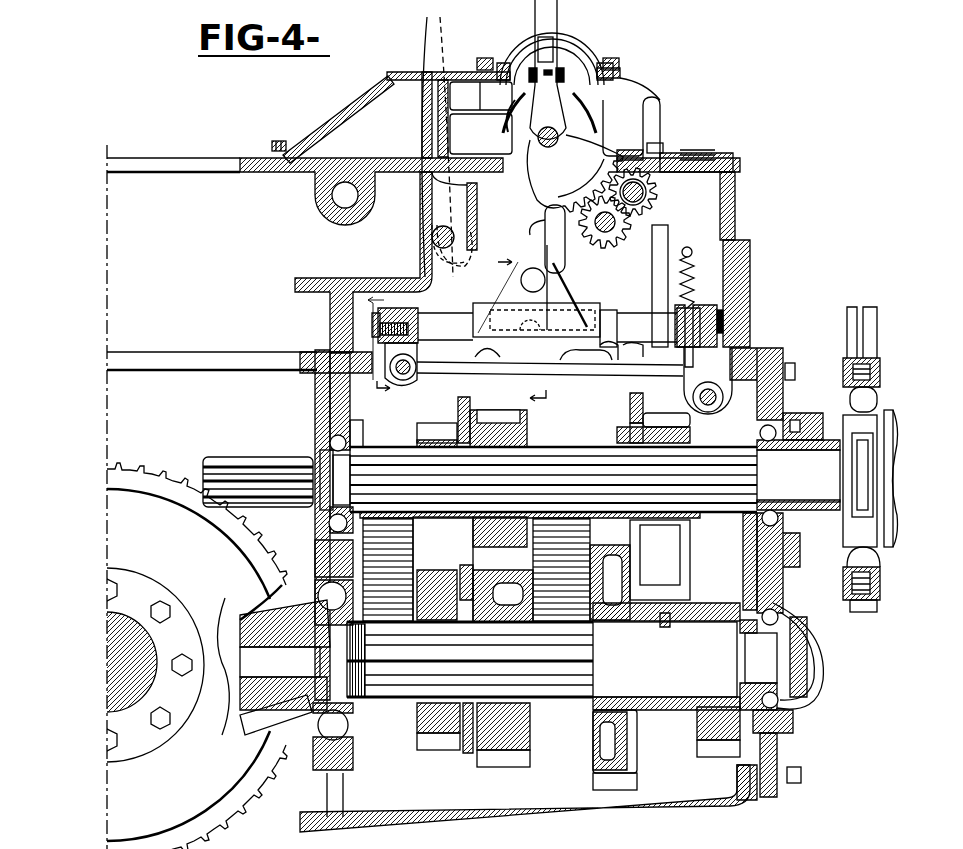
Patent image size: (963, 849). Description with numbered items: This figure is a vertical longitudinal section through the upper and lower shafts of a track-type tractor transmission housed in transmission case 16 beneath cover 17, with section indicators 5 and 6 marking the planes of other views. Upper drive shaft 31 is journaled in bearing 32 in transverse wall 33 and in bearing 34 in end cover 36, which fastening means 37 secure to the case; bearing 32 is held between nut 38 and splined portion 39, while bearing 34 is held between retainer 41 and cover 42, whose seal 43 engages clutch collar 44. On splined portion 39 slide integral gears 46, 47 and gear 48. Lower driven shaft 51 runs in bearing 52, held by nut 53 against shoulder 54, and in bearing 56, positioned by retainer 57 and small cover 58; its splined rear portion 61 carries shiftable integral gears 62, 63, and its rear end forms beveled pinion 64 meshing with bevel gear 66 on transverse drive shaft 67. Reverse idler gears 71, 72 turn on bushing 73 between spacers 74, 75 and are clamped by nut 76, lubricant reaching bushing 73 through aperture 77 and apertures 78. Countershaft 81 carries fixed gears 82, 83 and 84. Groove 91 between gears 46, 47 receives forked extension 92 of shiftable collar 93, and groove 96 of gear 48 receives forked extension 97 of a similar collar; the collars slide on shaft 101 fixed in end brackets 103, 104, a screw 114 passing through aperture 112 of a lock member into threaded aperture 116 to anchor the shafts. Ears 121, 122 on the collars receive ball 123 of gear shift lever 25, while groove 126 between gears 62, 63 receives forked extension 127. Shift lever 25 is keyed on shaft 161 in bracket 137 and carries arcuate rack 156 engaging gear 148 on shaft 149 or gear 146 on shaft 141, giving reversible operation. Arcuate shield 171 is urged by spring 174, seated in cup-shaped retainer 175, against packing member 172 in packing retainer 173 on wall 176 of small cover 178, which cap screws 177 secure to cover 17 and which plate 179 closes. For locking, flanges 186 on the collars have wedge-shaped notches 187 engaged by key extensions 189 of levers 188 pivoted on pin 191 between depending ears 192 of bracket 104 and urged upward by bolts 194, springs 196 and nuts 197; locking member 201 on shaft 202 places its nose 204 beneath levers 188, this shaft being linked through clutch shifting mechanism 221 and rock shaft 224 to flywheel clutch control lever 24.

The section line 5- 5 is at (519, 324).
The section line 6- 6 is at (379, 345).
The transmission case 16 is at (466, 806).
The cover 17 is at (283, 172).
The flywheel clutch control lever 24 is at (437, 27).
The gear shift lever 25 is at (557, 27).
The upper transmission drive shaft 31 is at (830, 490).
The bearing 32 is at (320, 432).
The vertical transverse wall 33 is at (320, 412).
The bearing 34 is at (775, 447).
The end cover 36 is at (790, 365).
The fastening means 37 is at (795, 385).
The nut 38 is at (307, 445).
The splined portion 39 is at (395, 447).
The retainer 41 is at (795, 400).
The cover 42 is at (808, 425).
The seal 43 is at (803, 420).
The collar 44 is at (833, 443).
The shiftable integral gear 46 is at (430, 440).
The shiftable integral gear 47 is at (512, 415).
The shiftable gear 48 is at (675, 440).
The lower transmission driven shaft 51 is at (662, 653).
The bearing 52 is at (318, 592).
The nut 53 is at (368, 735).
The shoulder 54 is at (303, 640).
The bearing 56 is at (790, 590).
The retainer 57 is at (750, 590).
The small cover 58 is at (815, 640).
The splined rear portion 61 is at (403, 693).
The integral gear 62 is at (440, 750).
The integral gear 63 is at (518, 752).
The beveled pinion 64 is at (265, 722).
The bevel gear 66 is at (255, 770).
The drive shaft 67 is at (122, 632).
The reverse idler gear 71 is at (637, 785).
The reverse idler gear 72 is at (728, 760).
The bushing 73 is at (650, 695).
The spacer 74 is at (605, 695).
The spacer 75 is at (742, 680).
The nut 76 is at (800, 680).
The aperture 77 is at (665, 605).
The lubricant receiving apertures 78 is at (678, 715).
The countershaft 81 is at (672, 556).
The gear 82 is at (413, 540).
The gear 83 is at (572, 560).
The gear 84 is at (705, 545).
The annular groove 91 is at (462, 525).
The forked extension 92 is at (458, 407).
The shiftable collar 93 is at (625, 296).
The annular groove 96 is at (628, 430).
The forked extension 97 is at (630, 412).
The shaft 101 is at (672, 300).
The end bracket 103 is at (725, 293).
The end bracket 104 is at (413, 312).
The aperture 112 is at (495, 836).
The screw 114 is at (372, 330).
The aperture 116 is at (588, 836).
The ear 121 is at (541, 282).
The ear 122 is at (685, 836).
The ball 123 is at (556, 278).
The annular groove 126 is at (466, 748).
The forked extension 127 is at (468, 565).
The bracket 137 is at (716, 228).
The shaft 141 is at (590, 232).
The integral gear 146 is at (615, 225).
The gear 148 is at (658, 190).
The shaft 149 is at (658, 205).
The arcuate rack extension 156 is at (640, 150).
The shaft 161 is at (537, 140).
The arcuate shield 171 is at (590, 95).
The packing member 172 is at (628, 105).
The packing retainer 173 is at (528, 92).
The spring 174 is at (583, 70).
The cup-shaped retainer 175 is at (598, 82).
The wall 176 is at (503, 123).
The cap screws 177 is at (280, 141).
The small cover 178 is at (352, 118).
The plate 179 is at (530, 48).
The flange 186 is at (480, 343).
The wedge-shaped notches 187 is at (628, 340).
The lever 188 is at (616, 396).
The key extension 189 is at (553, 368).
The pin 191 is at (398, 380).
The depending ears 192 is at (320, 356).
The bolt 194 is at (700, 330).
The spring 196 is at (694, 275).
The nut 197 is at (692, 255).
The locking member 201 is at (693, 400).
The shaft 202 is at (698, 410).
The nose 204 is at (690, 388).
The clutch shifting mechanism 221 is at (880, 590).
The rock shaft 224 is at (432, 237).